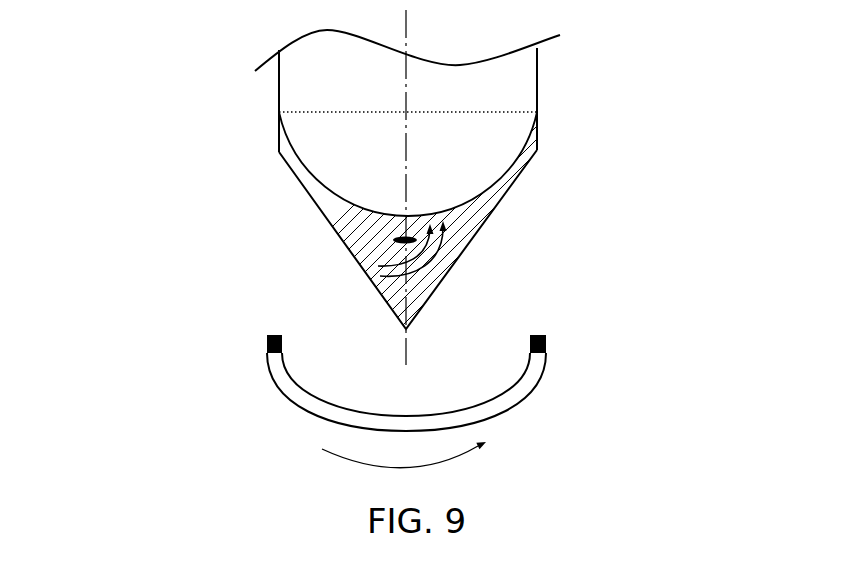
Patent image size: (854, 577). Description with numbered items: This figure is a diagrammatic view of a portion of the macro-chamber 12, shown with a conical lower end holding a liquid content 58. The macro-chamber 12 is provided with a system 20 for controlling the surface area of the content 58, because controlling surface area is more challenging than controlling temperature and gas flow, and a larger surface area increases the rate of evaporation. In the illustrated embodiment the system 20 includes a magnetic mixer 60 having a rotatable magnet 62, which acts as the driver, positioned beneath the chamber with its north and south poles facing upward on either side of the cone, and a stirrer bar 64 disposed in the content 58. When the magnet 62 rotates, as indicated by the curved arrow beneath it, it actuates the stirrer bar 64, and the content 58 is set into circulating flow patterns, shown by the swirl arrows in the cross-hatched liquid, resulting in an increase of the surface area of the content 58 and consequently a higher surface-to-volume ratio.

The macro-chamber 12 is at (538, 72).
The system for controlling surface area 20 is at (98, 209).
The content 58 is at (468, 236).
The magnetic mixer 60 is at (213, 400).
The rotatable magnet 62 is at (280, 397).
The stirrer bar 64 is at (393, 240).